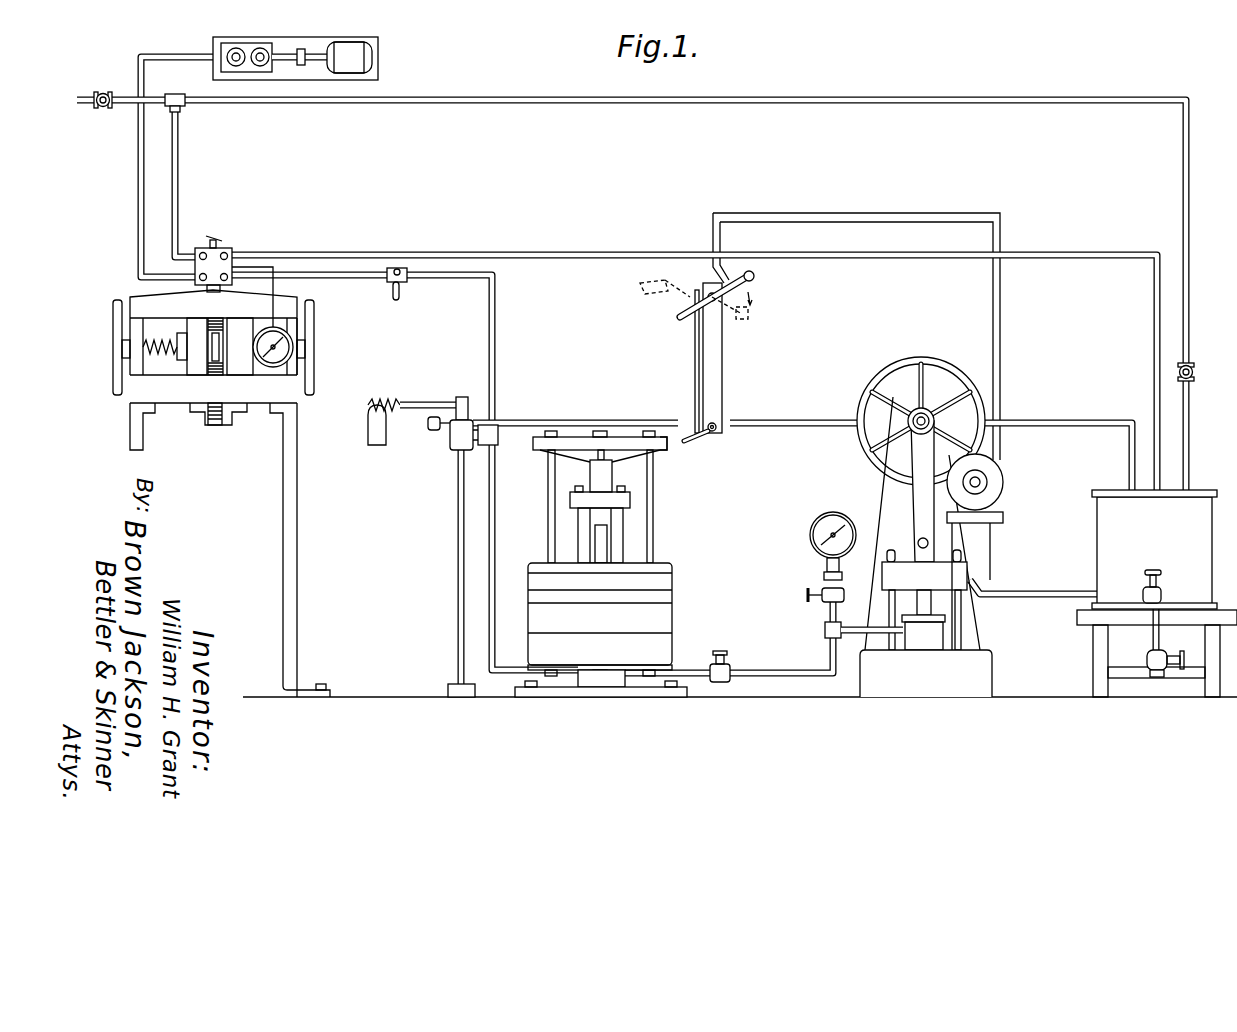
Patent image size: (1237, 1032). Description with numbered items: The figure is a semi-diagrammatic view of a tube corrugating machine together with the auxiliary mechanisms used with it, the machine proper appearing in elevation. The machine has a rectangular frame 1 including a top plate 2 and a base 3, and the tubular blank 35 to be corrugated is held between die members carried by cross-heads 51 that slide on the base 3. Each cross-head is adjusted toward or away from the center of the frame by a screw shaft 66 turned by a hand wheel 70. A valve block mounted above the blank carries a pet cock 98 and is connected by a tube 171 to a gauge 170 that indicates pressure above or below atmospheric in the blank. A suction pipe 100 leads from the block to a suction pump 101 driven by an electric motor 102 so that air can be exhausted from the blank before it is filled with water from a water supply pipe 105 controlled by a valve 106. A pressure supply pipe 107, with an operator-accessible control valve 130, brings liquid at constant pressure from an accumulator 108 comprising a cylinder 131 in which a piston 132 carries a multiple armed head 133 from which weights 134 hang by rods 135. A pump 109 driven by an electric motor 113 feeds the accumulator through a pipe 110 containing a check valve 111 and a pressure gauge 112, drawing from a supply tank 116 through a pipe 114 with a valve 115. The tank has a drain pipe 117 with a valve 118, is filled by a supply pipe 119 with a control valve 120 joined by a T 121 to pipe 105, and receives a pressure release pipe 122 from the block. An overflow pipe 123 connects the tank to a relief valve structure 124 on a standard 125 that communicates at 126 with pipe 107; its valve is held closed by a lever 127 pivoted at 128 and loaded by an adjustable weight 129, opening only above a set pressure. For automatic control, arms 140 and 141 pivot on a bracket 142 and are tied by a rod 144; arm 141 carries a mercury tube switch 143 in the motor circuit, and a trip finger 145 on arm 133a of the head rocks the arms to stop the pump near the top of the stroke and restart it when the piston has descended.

The rectangular frame 1 is at (136, 291).
The top plate 2 is at (288, 307).
The base 3 is at (180, 401).
The blank 35 is at (211, 320).
The cross-heads 51 is at (190, 326).
The screw shaft 66 is at (166, 372).
The hand wheel 70 is at (113, 323).
The pet cock 98 is at (217, 244).
The suction pipe 100 is at (138, 209).
The suction pump 101 is at (237, 49).
The electric motor 102 is at (352, 49).
The water supply pipe 105 is at (178, 180).
The valve 106 is at (104, 93).
The pressure supply pipe 107 is at (497, 326).
The accumulator 108 is at (574, 488).
The pump 109 is at (889, 497).
The pipe 110 is at (800, 670).
The check valve 111 is at (723, 667).
The pressure gauge 112 is at (813, 529).
The electric motor 113 is at (1004, 477).
The pipe 114 is at (1012, 594).
The valve 115 is at (1159, 586).
The supply tank 116 is at (1104, 527).
The drain pipe 117 is at (1152, 636).
The valve 118 is at (1161, 652).
The supply pipe 119 is at (848, 99).
The control valve 120 is at (1194, 376).
The T 121 is at (178, 106).
The pressure release pipe 122 is at (602, 250).
The overflow pipe 123 is at (528, 419).
The relief valve structure 124 is at (452, 441).
The standard 125 is at (457, 549).
The communication 126 is at (460, 452).
The lever 127 is at (419, 400).
The pivot 128 is at (466, 400).
The weight 129 is at (370, 441).
The control valve 130 is at (408, 279).
The cylinder 131 is at (590, 540).
The piston 132 is at (590, 471).
The multiple armed head 133 is at (581, 436).
The arm 133a is at (650, 285).
The weights 134 is at (659, 620).
The rods 135 is at (553, 500).
The arm 140 is at (701, 439).
The arm 141 is at (687, 313).
The bracket 142 is at (714, 350).
The mercury tube switch 143 is at (754, 279).
The rod 144 is at (696, 362).
The trip finger 145 is at (671, 448).
The gauge 170 is at (258, 364).
The tube 171 is at (272, 305).